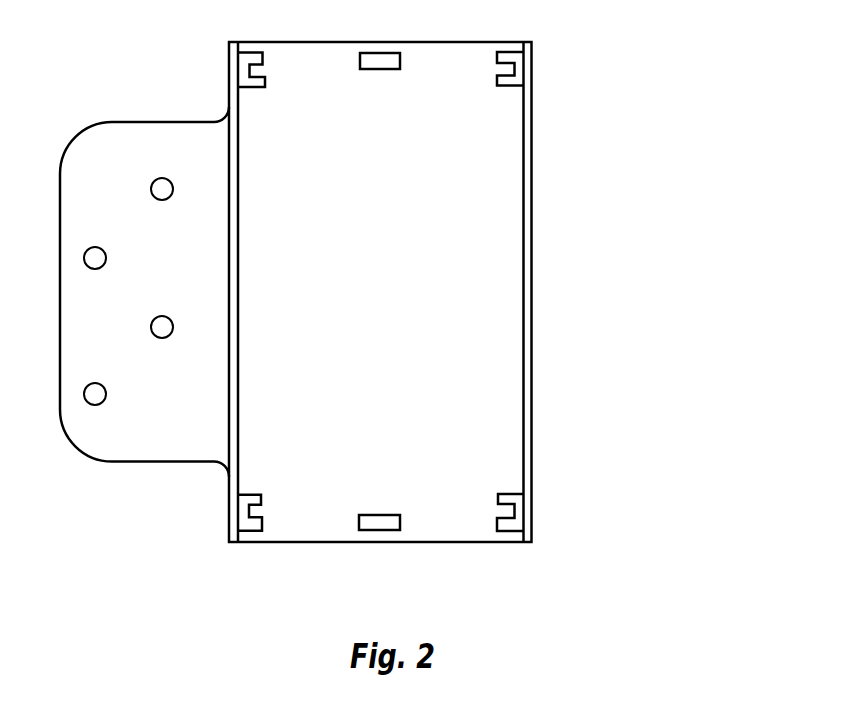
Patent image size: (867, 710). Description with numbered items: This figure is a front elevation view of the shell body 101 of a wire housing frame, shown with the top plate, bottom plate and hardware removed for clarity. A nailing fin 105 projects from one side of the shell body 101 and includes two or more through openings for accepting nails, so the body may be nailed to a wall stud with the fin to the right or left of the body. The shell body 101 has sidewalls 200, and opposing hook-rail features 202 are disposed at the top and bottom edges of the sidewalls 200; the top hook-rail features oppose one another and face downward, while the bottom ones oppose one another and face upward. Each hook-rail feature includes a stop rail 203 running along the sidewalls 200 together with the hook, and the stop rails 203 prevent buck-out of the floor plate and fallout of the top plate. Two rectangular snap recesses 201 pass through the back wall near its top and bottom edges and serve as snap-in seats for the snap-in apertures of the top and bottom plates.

The shell body 101 is at (617, 125).
The nailing fin 105 is at (165, 122).
The sidewalls 200 is at (532, 304).
The rectangular snap recesses 201 is at (380, 69).
The hook-rail features 202 is at (265, 515).
The stop rail 203 is at (510, 494).